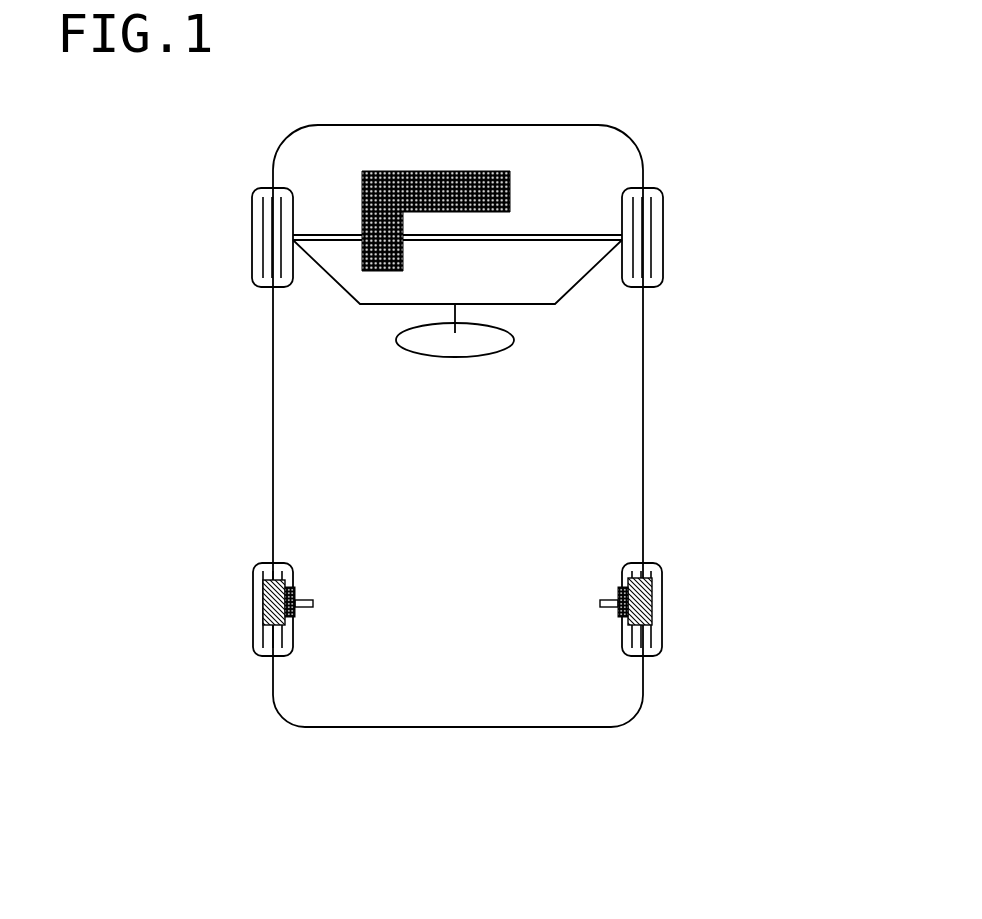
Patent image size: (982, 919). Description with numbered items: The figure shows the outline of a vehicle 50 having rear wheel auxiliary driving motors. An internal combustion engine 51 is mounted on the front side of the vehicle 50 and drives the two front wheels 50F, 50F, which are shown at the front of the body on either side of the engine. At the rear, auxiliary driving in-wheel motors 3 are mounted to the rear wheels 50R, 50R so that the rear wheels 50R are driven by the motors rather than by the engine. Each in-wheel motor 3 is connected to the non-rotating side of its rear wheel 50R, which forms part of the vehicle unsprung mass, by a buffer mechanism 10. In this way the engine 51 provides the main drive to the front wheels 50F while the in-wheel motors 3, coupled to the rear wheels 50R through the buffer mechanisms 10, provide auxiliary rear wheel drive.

The vehicle 50 is at (672, 188).
The internal combustion engine 51 is at (472, 172).
The front wheel 50F is at (253, 235).
The rear wheel 50R is at (253, 572).
The in-wheel motor 3 is at (264, 612).
The buffer mechanism 10 is at (293, 614).